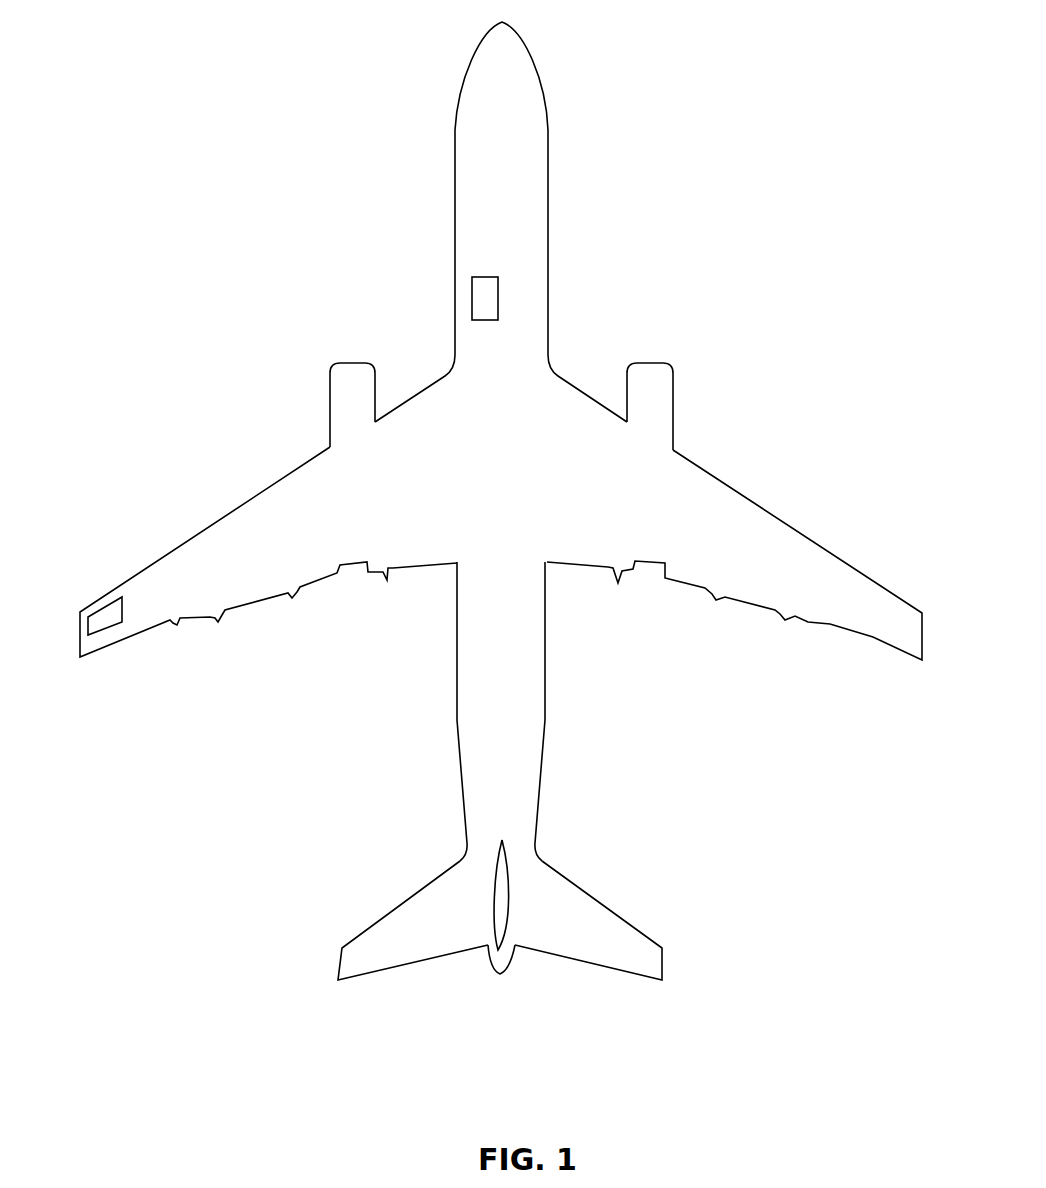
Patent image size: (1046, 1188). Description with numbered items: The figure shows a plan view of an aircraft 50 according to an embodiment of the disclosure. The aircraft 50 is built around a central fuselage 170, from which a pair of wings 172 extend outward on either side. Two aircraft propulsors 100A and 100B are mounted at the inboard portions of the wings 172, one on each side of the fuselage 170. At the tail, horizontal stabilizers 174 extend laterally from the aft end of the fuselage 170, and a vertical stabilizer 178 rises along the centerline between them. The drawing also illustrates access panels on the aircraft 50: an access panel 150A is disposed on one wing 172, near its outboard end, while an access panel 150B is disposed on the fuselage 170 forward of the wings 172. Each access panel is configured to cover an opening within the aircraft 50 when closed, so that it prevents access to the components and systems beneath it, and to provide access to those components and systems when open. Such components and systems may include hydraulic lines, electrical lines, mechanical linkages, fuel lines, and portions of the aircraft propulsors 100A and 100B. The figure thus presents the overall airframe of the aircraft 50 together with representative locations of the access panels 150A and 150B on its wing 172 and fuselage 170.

The aircraft 50 is at (463, 82).
The fuselage 170 is at (455, 213).
The wings 172 is at (132, 578).
The horizontal stabilizers 174 is at (380, 917).
The vertical stabilizer 178 is at (492, 902).
The aircraft propulsor 100A is at (330, 365).
The aircraft propulsor 100B is at (673, 365).
The access panel 150A is at (103, 632).
The access panel 150B is at (472, 292).